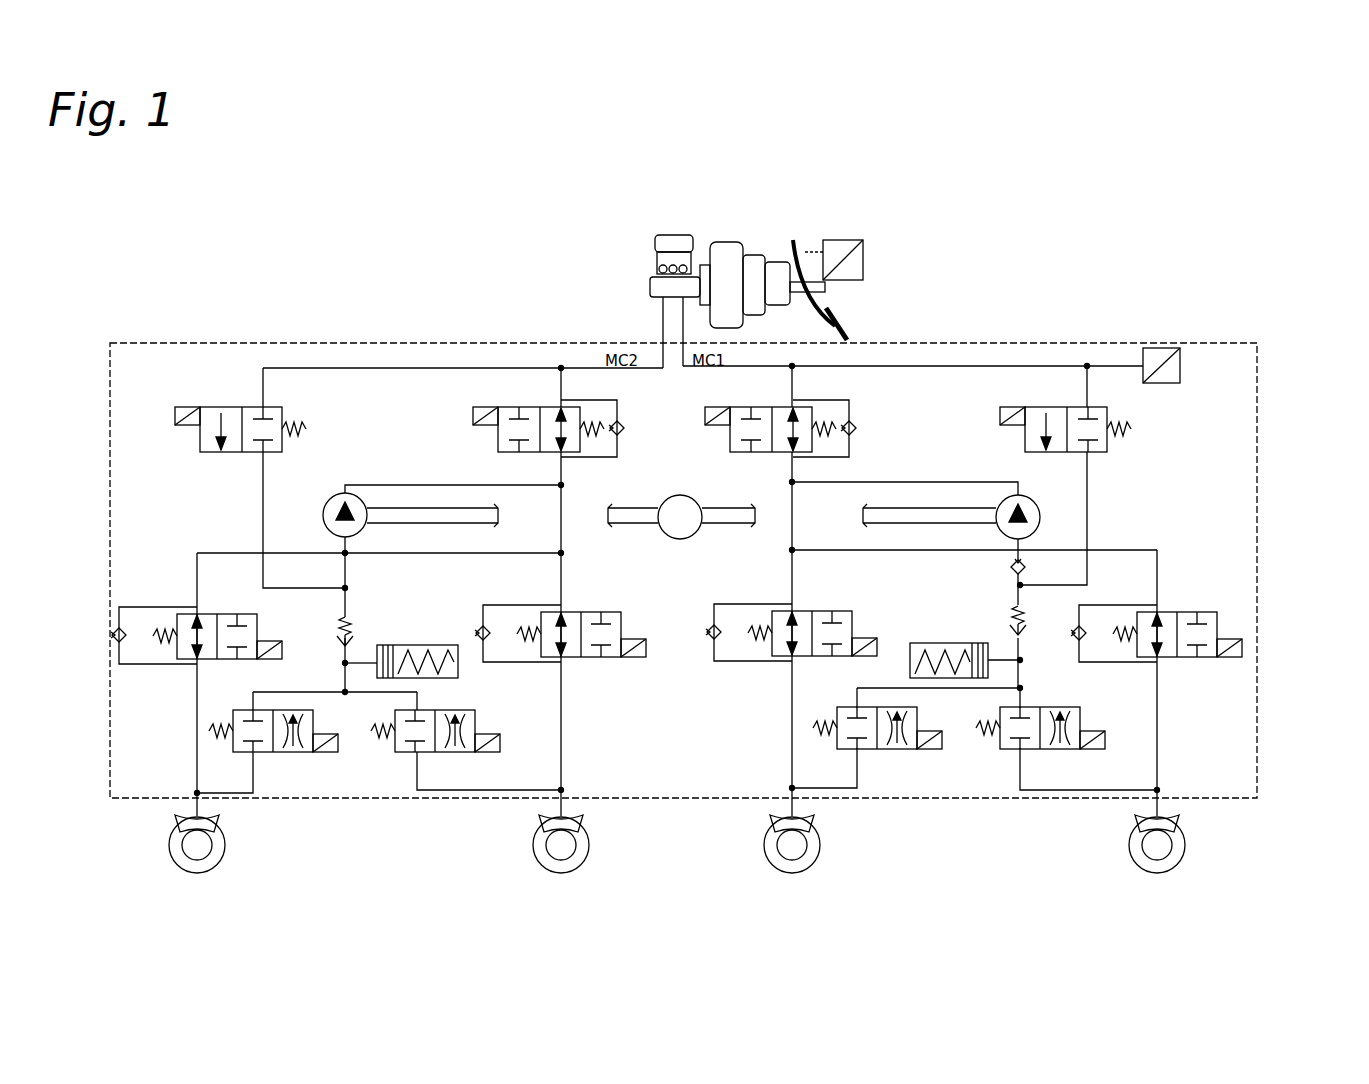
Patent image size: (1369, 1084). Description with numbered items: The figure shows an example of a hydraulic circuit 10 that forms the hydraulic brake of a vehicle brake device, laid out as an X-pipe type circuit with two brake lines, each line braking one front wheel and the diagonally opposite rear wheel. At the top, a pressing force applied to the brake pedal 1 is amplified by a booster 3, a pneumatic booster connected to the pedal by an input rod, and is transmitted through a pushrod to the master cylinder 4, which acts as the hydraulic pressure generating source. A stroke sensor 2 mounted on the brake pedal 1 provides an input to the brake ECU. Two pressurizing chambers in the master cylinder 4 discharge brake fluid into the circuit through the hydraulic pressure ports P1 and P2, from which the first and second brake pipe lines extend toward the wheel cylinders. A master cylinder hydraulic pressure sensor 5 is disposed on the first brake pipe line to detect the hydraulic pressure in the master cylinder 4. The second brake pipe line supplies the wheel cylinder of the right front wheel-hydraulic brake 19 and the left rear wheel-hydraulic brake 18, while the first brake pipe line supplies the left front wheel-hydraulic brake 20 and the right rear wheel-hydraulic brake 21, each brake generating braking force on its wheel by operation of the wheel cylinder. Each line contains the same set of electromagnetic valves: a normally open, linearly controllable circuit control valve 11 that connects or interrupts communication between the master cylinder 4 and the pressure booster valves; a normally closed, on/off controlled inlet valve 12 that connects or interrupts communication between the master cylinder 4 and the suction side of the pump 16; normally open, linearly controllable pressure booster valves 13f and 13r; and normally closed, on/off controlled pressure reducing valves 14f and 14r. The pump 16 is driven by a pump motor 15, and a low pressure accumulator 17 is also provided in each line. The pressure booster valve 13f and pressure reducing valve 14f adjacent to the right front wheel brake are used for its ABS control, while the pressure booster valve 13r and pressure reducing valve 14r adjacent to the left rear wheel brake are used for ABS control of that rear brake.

The brake pedal 1 is at (858, 292).
The stroke sensor 2 is at (845, 240).
The booster 3 is at (728, 240).
The master cylinder 4 is at (657, 270).
The master cylinder hydraulic pressure sensor 5 is at (1160, 347).
The hydraulic circuit 10 is at (1257, 513).
The circuit control valve 11 is at (540, 405).
The inlet valve 12 is at (252, 405).
The pressure booster valve 13f is at (582, 612).
The pressure booster valve 13r is at (222, 612).
The pressure reducing valve 14f is at (430, 753).
The pressure reducing valve 14r is at (265, 755).
The pump motor 15 is at (675, 495).
The pump 16 is at (330, 498).
The low pressure accumulator 17 is at (410, 645).
The left rear wheel-hydraulic brake 18 is at (218, 820).
The right front wheel-hydraulic brake 19 is at (582, 820).
The left front wheel-hydraulic brake 20 is at (813, 820).
The right rear wheel-hydraulic brake 21 is at (1178, 820).
The hydraulic pressure port P1 is at (698, 331).
The hydraulic pressure port P2 is at (637, 329).